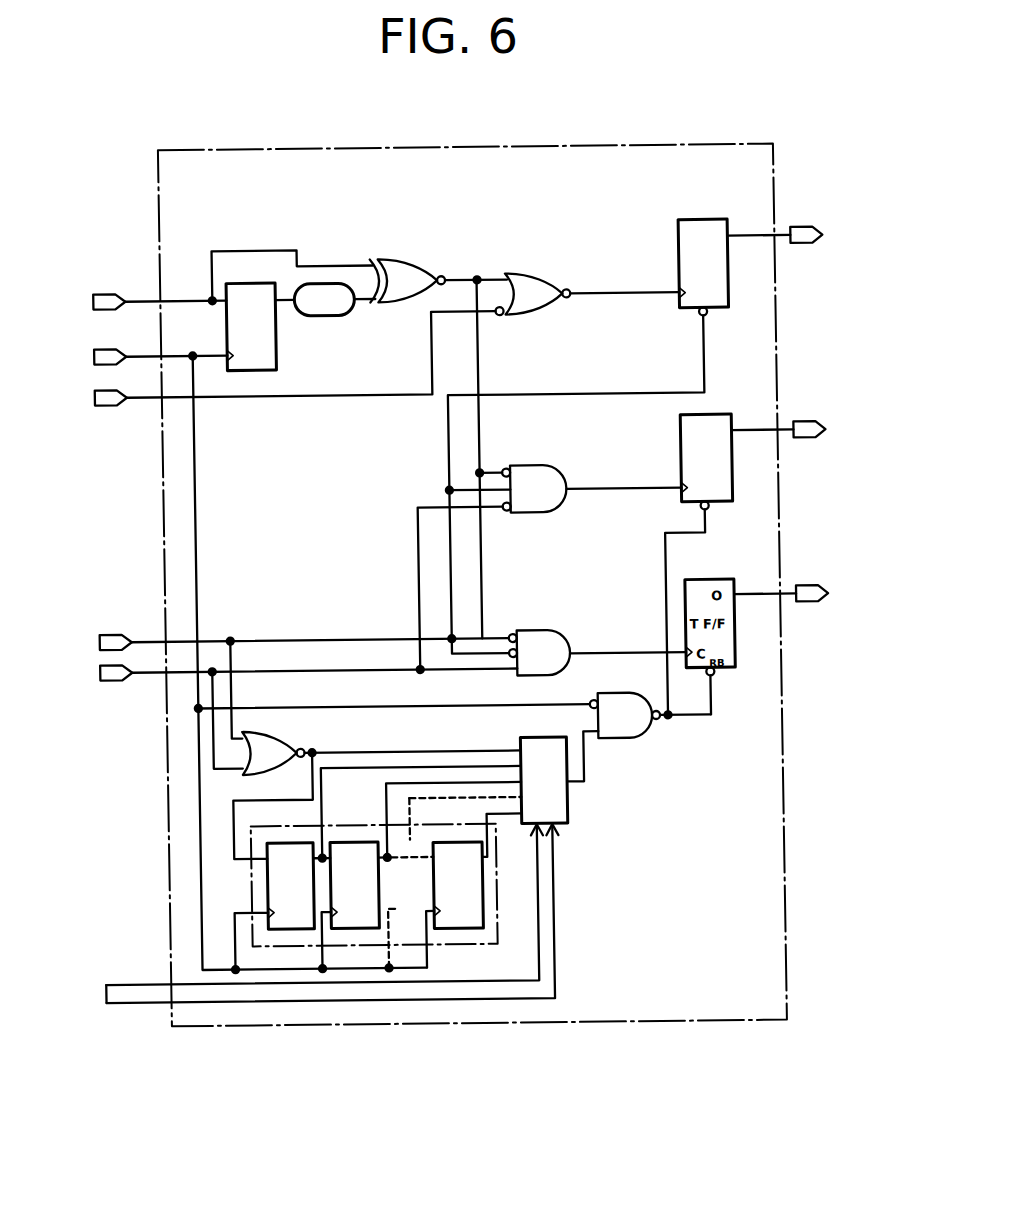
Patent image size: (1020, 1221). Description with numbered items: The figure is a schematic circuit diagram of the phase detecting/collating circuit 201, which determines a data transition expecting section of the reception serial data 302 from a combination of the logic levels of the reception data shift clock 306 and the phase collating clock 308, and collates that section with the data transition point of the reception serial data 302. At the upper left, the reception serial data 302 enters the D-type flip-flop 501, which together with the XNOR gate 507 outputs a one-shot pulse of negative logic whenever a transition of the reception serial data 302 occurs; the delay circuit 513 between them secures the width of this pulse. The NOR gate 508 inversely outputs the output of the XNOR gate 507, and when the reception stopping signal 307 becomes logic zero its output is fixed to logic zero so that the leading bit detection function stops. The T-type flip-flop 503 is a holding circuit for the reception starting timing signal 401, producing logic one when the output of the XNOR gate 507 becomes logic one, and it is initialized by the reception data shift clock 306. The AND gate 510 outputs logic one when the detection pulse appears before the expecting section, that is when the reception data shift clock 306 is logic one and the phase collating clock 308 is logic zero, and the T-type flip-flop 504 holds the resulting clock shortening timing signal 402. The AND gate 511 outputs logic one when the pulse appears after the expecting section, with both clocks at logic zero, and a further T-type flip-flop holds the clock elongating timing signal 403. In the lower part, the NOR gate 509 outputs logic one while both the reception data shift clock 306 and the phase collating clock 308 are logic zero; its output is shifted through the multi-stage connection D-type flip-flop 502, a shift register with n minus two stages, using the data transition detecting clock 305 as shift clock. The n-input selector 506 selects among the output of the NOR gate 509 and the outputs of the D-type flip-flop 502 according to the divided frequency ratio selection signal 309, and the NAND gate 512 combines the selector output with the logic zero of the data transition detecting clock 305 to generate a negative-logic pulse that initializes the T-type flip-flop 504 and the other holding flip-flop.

The phase detecting/collating circuit 201 is at (472, 147).
The reception serial data 302 is at (129, 302).
The data transition detecting clock 305 is at (130, 358).
The reception data shift clock 306 is at (273, 641).
The reception stopping signal 307 is at (266, 363).
The phase collating clock 308 is at (277, 673).
The divided frequency ratio selection signal 309 is at (303, 919).
The reception starting timing signal 401 is at (803, 233).
The clock shortening timing signal 402 is at (808, 430).
The clock elongating timing signal 403 is at (811, 593).
The D-type flip-flop 501 is at (282, 341).
The (n−2)-stage connection D-type flip-flop 502 is at (346, 819).
The T-type flip-flop 503 is at (696, 219).
The T-type flip-flop 504 is at (682, 442).
The n-input selector 506 is at (565, 809).
The XNOR gate 507 is at (413, 259).
The NOR gate 508 is at (535, 274).
The NOR gate 509 is at (283, 731).
The AND gate 510 is at (529, 466).
The AND gate 511 is at (526, 629).
The NAND gate 512 is at (631, 742).
The delay circuit 513 is at (332, 282).